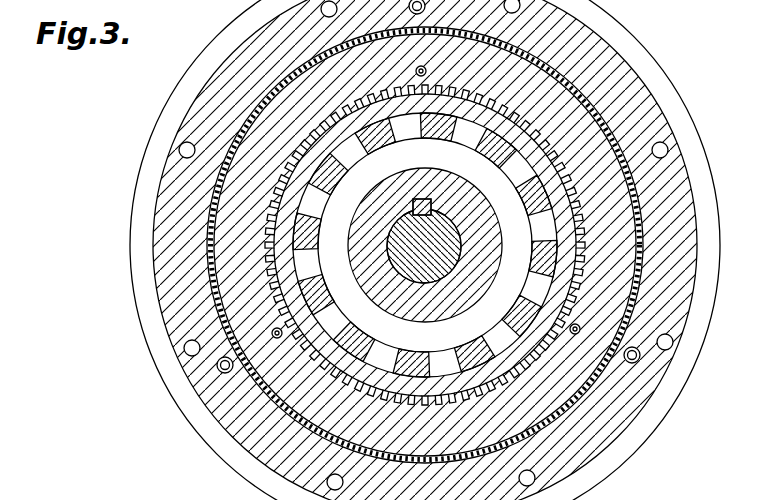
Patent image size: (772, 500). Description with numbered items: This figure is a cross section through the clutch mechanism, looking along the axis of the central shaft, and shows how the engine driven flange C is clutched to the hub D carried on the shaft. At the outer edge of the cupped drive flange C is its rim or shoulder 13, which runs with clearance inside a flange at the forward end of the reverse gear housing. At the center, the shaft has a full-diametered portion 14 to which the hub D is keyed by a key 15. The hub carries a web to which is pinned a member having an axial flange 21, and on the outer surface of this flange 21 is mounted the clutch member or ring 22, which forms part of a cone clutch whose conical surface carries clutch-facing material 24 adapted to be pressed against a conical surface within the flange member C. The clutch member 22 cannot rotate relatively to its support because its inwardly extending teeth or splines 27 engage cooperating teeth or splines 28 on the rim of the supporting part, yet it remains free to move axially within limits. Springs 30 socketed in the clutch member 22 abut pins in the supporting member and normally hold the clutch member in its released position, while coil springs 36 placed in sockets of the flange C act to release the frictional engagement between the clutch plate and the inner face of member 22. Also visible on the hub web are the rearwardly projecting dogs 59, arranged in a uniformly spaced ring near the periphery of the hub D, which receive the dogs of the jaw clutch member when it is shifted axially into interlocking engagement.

The engine driven flange C is at (173, 88).
The rim or shoulder 13 is at (147, 150).
The full-diametered portion 14 is at (403, 223).
The key 15 is at (425, 199).
The dogs 59 is at (435, 127).
The hub D is at (358, 212).
The axial flange 21 is at (287, 267).
The inwardly extending teeth or splines 27 is at (280, 305).
The cooperating teeth or splines 28 is at (218, 315).
The clutch member or ring 22 is at (283, 373).
The clutch-facing material 24 is at (273, 403).
The springs 30 is at (576, 334).
The coil springs 36 is at (634, 362).